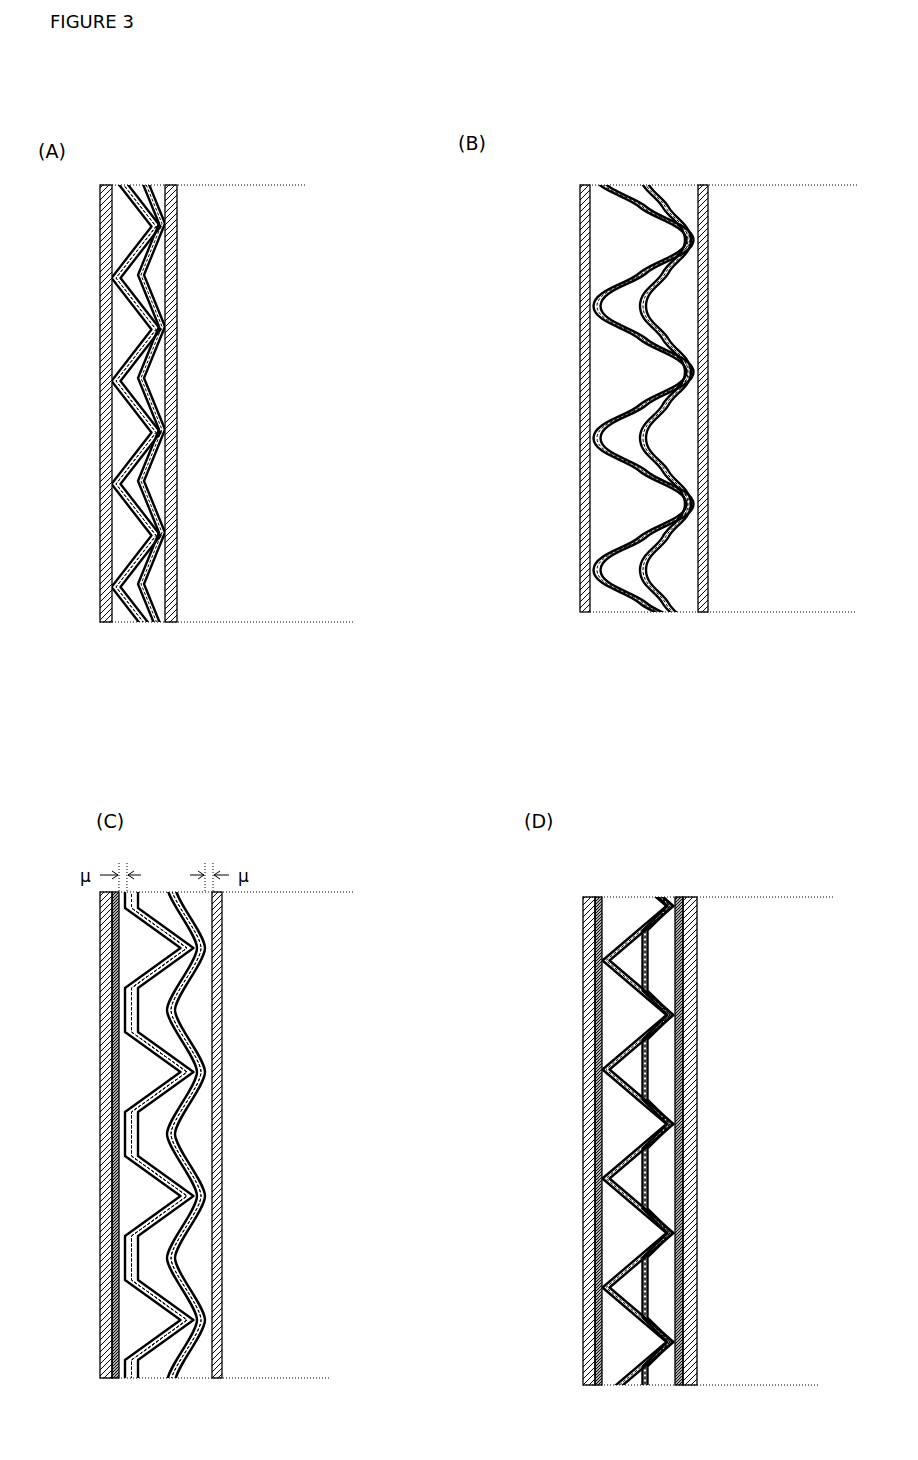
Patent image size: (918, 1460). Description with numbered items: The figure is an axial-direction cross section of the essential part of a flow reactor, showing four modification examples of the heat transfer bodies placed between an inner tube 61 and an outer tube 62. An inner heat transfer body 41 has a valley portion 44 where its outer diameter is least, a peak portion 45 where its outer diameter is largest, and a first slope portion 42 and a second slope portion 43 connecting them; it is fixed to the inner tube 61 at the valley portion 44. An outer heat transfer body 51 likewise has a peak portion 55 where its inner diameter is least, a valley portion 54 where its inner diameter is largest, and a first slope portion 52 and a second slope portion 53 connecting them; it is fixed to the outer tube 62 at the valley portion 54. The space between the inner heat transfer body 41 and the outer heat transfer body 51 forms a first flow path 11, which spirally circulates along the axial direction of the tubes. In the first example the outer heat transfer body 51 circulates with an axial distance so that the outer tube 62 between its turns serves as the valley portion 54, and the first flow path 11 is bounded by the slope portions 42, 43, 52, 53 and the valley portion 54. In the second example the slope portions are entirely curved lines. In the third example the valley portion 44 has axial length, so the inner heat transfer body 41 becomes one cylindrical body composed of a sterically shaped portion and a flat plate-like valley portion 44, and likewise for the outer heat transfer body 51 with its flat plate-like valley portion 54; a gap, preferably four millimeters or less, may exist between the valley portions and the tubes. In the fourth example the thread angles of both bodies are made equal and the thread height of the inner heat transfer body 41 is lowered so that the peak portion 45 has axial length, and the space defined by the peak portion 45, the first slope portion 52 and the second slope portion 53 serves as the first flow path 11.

In FIG. 3A, the first flow path 11 is at (140, 354).
In FIG. 3B, the first flow path 11 is at (640, 372).
In FIG. 3C, the first flow path 11 is at (159, 1134).
In FIG. 3D, the first flow path 11 is at (657, 1111).
In FIG. 3A, the inner heat transfer body 41 is at (180, 273).
In FIG. 3B, the inner heat transfer body 41 is at (677, 280).
In FIG. 3C, the inner heat transfer body 41 is at (207, 990).
In FIG. 3D, the inner heat transfer body 41 is at (695, 938).
In FIG. 3A, the first slope portion 42 is at (157, 360).
In FIG. 3B, the first slope portion 42 is at (667, 423).
In FIG. 3C, the first slope portion 42 is at (200, 1040).
In FIG. 3D, the first slope portion 42 is at (693, 1047).
In FIG. 3A, the second slope portion 43 is at (160, 403).
In FIG. 3B, the second slope portion 43 is at (670, 467).
In FIG. 3C, the second slope portion 43 is at (200, 1110).
In FIG. 3D, the second slope portion 43 is at (667, 1107).
In FIG. 3C, the valley portion 44 is at (215, 1085).
In FIG. 3C, the peak portion 45 is at (180, 1140).
In FIG. 3D, the peak portion 45 is at (650, 1068).
In FIG. 3A, the outer heat transfer body 51 is at (120, 310).
In FIG. 3B, the outer heat transfer body 51 is at (596, 285).
In FIG. 3C, the outer heat transfer body 51 is at (130, 983).
In FIG. 3D, the outer heat transfer body 51 is at (607, 948).
In FIG. 3A, the first slope portion 52 is at (123, 350).
In FIG. 3B, the first slope portion 52 is at (643, 407).
In FIG. 3C, the first slope portion 52 is at (140, 1172).
In FIG. 3D, the first slope portion 52 is at (605, 1047).
In FIG. 3A, the second slope portion 53 is at (100, 447).
In FIG. 3B, the second slope portion 53 is at (630, 483).
In FIG. 3C, the second slope portion 53 is at (147, 1218).
In FIG. 3D, the second slope portion 53 is at (590, 1100).
In FIG. 3A, the valley portion 54 is at (100, 390).
In FIG. 3C, the valley portion 54 is at (120, 1263).
In FIG. 3C, the peak portion 55 is at (177, 1195).
In FIG. 3A, the inner tube 61 is at (179, 240).
In FIG. 3B, the inner tube 61 is at (709, 350).
In FIG. 3C, the inner tube 61 is at (222, 938).
In FIG. 3D, the inner tube 61 is at (698, 915).
In FIG. 3A, the outer tube 62 is at (98, 222).
In FIG. 3B, the outer tube 62 is at (579, 343).
In FIG. 3C, the outer tube 62 is at (98, 951).
In FIG. 3D, the outer tube 62 is at (581, 912).